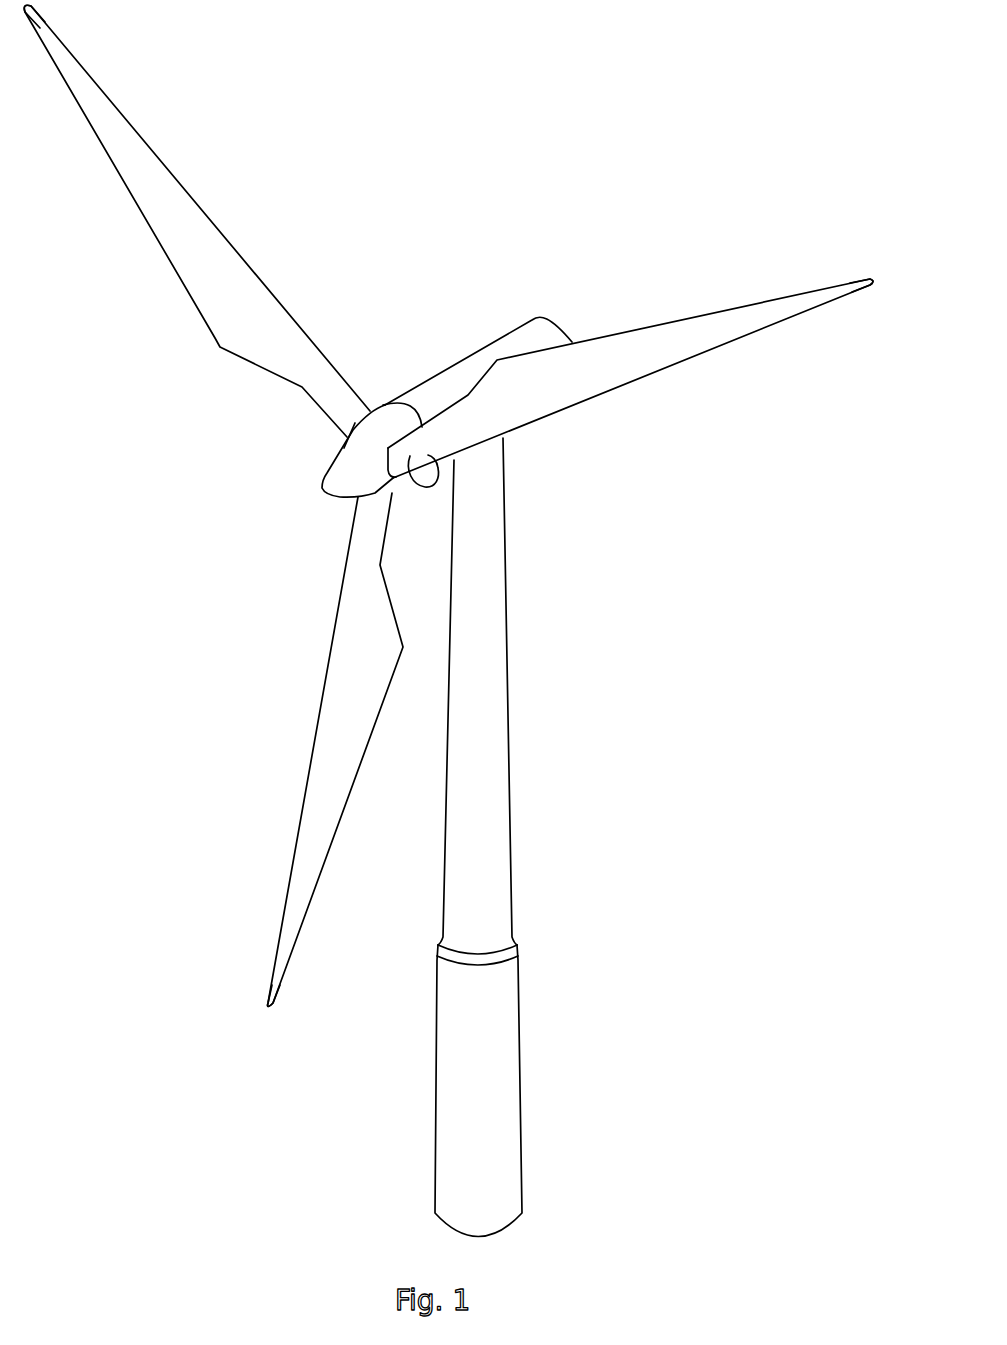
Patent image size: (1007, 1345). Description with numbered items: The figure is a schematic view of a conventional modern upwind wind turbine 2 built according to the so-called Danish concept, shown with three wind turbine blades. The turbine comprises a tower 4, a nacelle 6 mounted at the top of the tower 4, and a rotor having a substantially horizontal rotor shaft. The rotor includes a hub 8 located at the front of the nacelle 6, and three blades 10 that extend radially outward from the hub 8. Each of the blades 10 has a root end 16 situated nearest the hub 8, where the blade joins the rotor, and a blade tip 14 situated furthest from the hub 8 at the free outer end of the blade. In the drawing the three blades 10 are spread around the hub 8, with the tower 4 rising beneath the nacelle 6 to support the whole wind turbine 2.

The wind turbine 2 is at (606, 775).
The tower 4 is at (498, 694).
The nacelle 6 is at (440, 385).
The hub 8 is at (340, 466).
The blades 10 is at (233, 317).
The blade tip 14 is at (68, 66).
The root end 16 is at (345, 438).